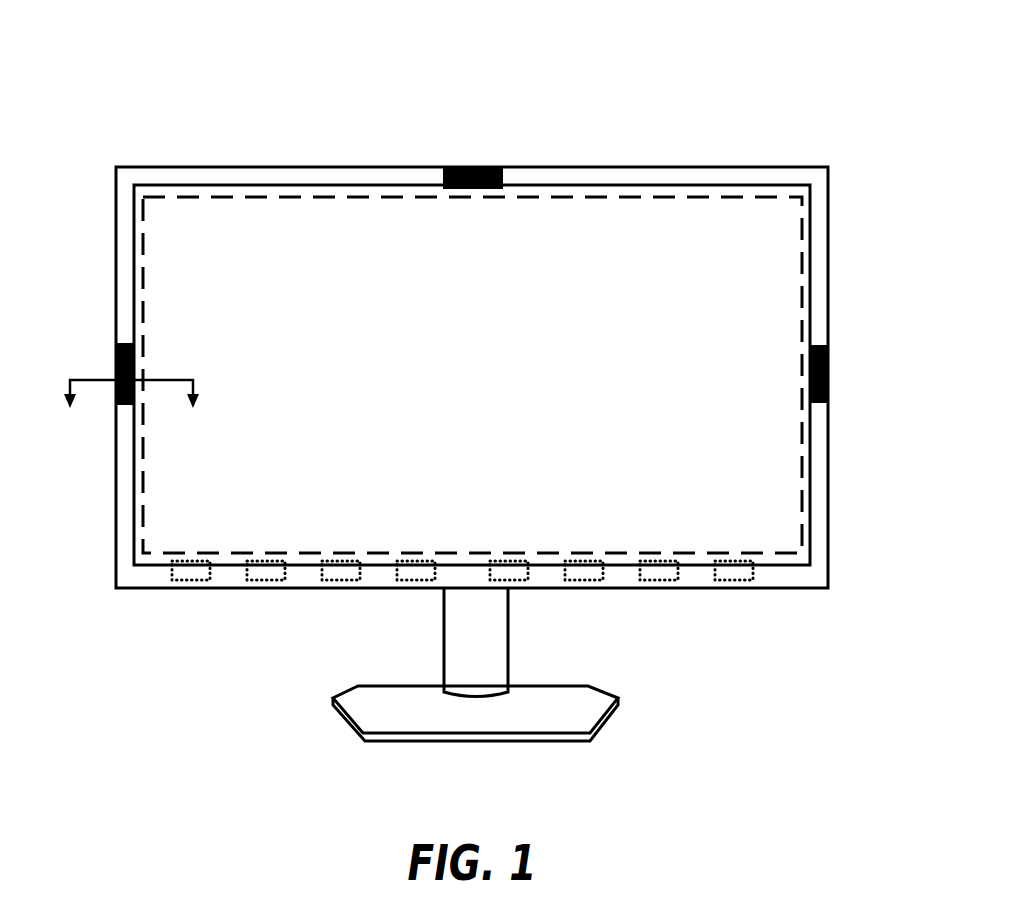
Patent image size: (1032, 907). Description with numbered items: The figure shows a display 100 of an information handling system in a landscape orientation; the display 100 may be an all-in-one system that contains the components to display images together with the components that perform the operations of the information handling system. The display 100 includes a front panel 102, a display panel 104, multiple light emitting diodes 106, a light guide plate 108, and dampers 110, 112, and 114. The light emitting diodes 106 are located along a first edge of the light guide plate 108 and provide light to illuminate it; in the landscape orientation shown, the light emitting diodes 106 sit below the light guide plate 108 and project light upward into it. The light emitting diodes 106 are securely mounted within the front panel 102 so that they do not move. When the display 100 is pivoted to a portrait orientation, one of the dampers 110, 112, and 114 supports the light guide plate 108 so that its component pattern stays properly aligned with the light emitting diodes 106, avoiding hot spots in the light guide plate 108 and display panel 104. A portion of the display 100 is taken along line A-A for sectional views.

The display 100 is at (782, 66).
The front panel 102 is at (154, 573).
The display panel 104 is at (803, 480).
The light emitting diodes 106 is at (268, 583).
The light guide plate 108 is at (795, 231).
The damper 110 is at (118, 374).
The damper 112 is at (472, 167).
The damper 114 is at (829, 385).